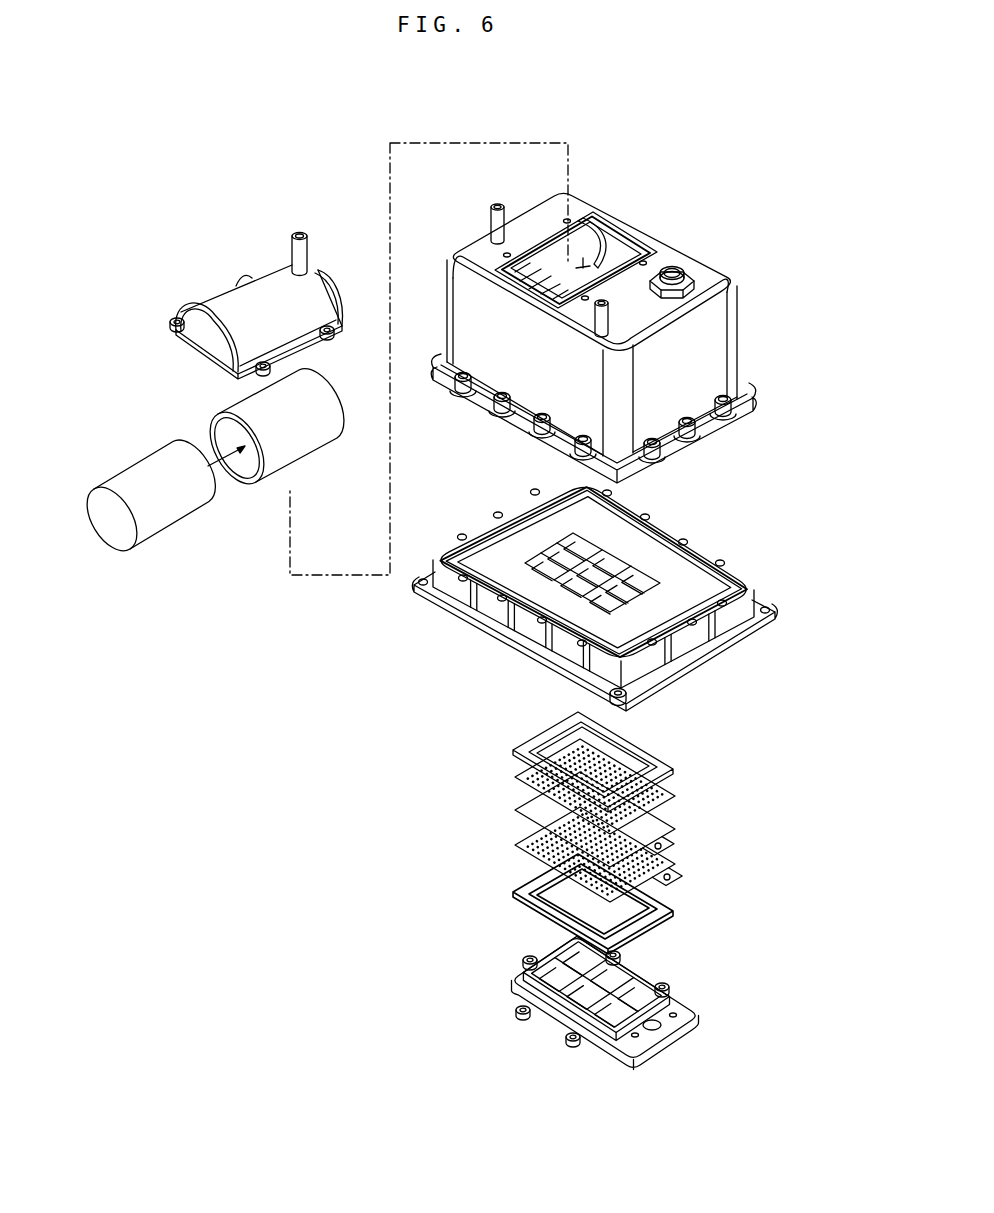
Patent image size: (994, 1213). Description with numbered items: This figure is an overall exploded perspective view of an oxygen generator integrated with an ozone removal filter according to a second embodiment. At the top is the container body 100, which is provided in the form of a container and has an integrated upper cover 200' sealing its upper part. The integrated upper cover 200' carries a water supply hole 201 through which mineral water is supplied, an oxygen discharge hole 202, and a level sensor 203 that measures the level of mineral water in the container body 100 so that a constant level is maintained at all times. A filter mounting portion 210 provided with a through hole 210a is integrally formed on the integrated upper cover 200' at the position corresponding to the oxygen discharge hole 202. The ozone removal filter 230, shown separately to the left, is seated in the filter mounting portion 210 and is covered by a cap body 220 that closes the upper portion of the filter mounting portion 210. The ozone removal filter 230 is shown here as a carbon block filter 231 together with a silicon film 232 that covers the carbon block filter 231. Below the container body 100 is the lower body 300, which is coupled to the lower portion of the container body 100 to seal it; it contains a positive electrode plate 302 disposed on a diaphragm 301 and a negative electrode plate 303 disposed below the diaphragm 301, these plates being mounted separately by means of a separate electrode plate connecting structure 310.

The container body 100 is at (624, 338).
The integrated upper cover 200' is at (591, 271).
The water supply hole 201 is at (680, 270).
The oxygen discharge hole 202 is at (304, 236).
The level sensor 203 is at (580, 272).
The filter mounting portion 210 is at (595, 242).
The through hole 210a is at (505, 254).
The cap body 220 is at (254, 284).
The ozone removal filter 230 is at (212, 479).
The carbon block filter 231 is at (163, 526).
The silicon film 232 is at (307, 446).
The lower body 300 is at (503, 623).
The diaphragm 301 is at (517, 810).
The positive electrode plate 302 is at (517, 777).
The negative electrode plate 303 is at (517, 846).
The electrode plate connecting structure 310 is at (510, 977).